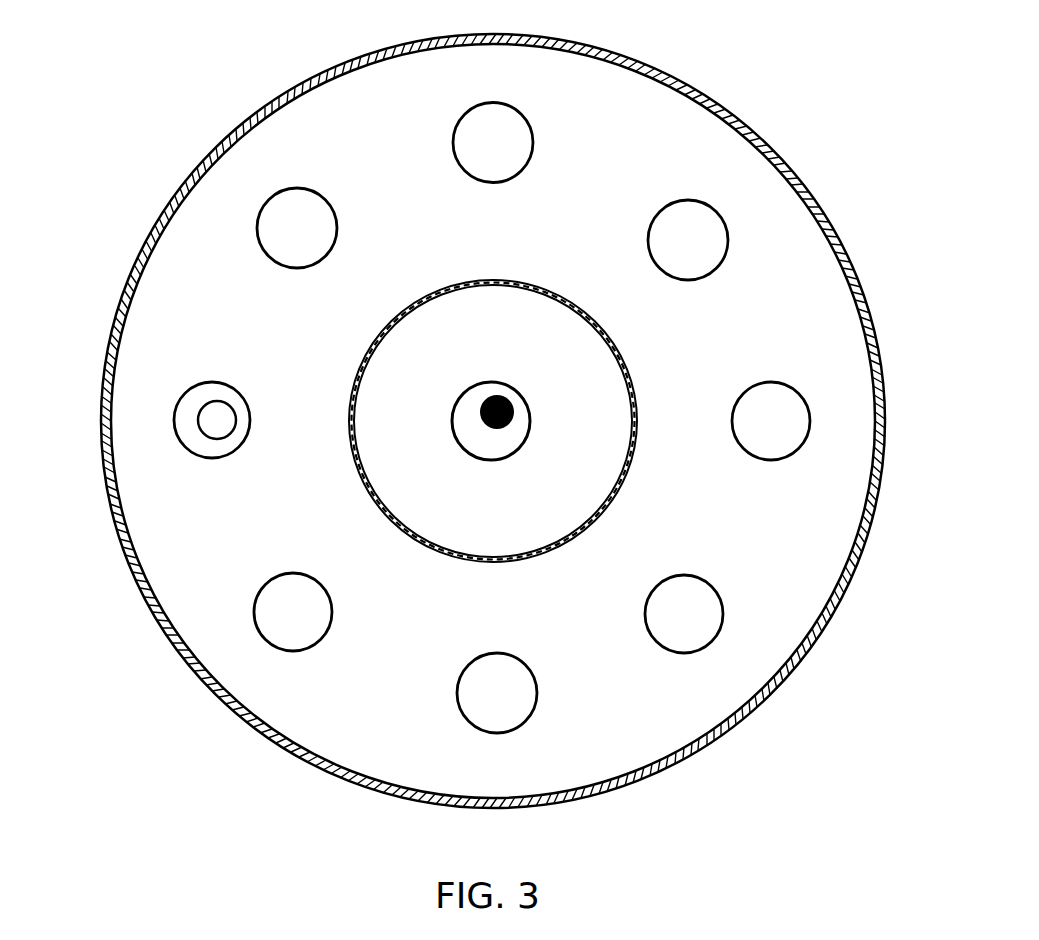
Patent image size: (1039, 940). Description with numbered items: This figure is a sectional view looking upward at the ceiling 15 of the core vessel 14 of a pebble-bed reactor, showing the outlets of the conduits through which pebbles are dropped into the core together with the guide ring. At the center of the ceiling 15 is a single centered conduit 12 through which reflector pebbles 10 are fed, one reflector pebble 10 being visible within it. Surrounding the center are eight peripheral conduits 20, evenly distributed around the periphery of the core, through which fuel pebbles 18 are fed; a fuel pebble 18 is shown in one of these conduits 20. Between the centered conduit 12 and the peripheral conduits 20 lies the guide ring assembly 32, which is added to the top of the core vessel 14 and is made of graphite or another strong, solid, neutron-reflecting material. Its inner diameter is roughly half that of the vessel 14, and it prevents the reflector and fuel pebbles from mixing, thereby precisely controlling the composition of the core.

The reflector pebbles 10 is at (508, 404).
The centered conduit 12 is at (478, 380).
The core vessel 14 is at (120, 295).
The ceiling 15 is at (610, 152).
The fuel pebbles 18 is at (225, 415).
The peripheral conduits 20 is at (272, 193).
The guide ring assembly 32 is at (443, 287).